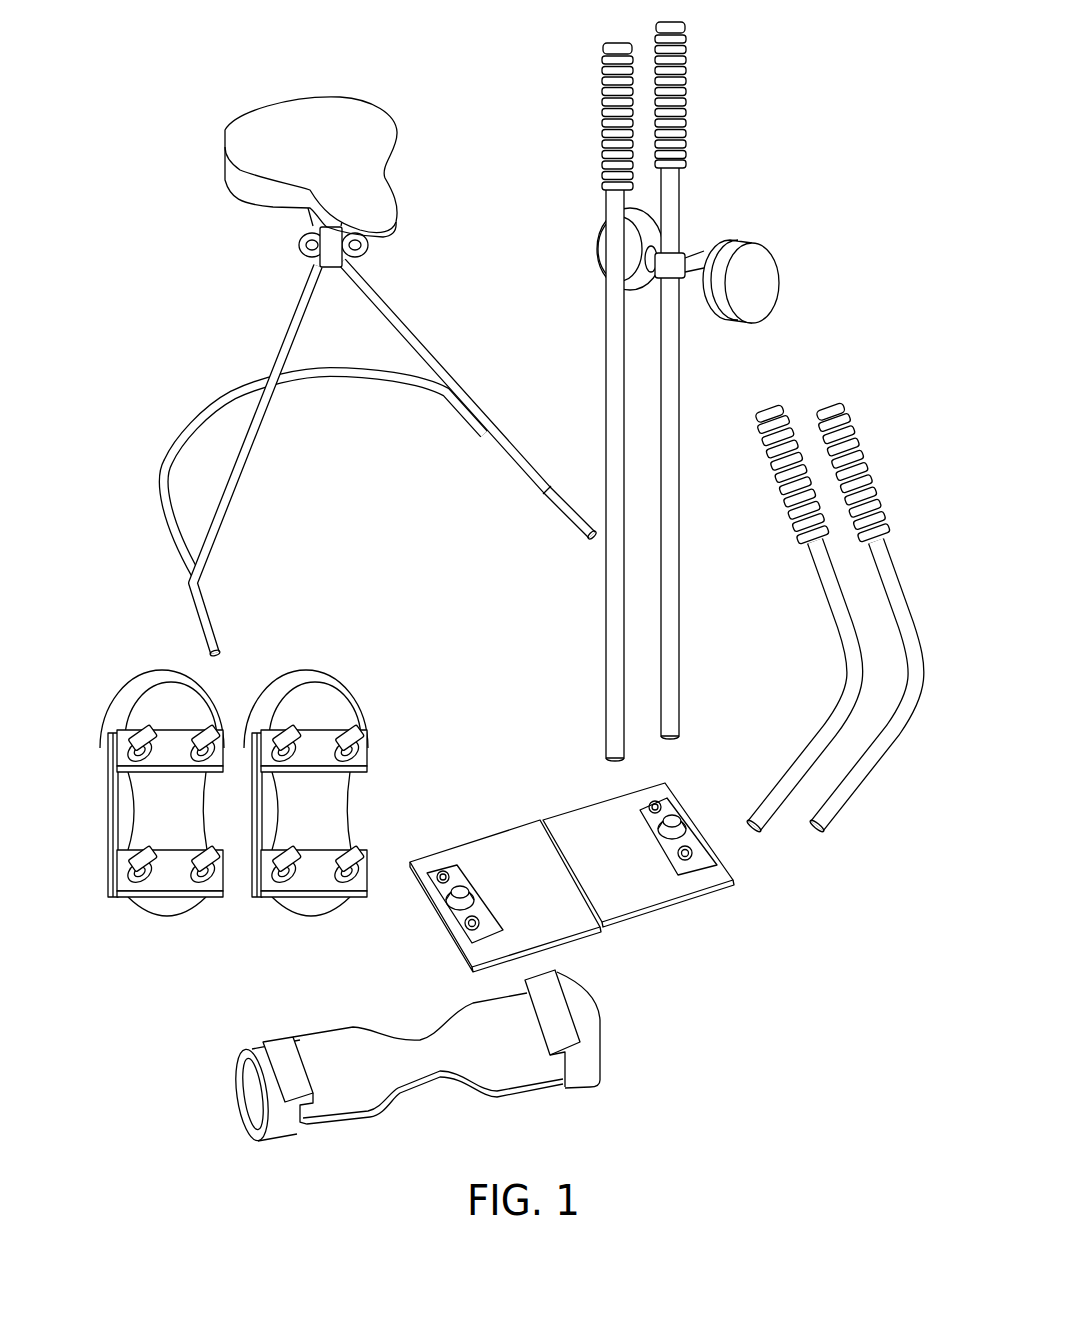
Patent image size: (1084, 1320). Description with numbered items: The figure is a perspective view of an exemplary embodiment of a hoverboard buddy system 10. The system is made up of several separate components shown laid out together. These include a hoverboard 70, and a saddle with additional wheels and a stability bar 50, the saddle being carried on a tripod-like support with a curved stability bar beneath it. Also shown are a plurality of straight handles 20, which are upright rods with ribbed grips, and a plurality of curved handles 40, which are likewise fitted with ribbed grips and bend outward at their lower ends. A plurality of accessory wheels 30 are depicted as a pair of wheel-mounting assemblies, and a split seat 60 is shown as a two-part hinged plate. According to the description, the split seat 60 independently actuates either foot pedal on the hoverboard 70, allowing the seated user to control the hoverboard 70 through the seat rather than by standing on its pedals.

The hoverboard buddy system 10 is at (495, 582).
The straight handles 20 is at (733, 87).
The accessory wheels 30 is at (380, 703).
The curved handles 40 is at (867, 420).
The saddle with additional wheels and a stability bar 50 is at (188, 135).
The split seat 60 is at (720, 915).
The hoverboard 70 is at (280, 1010).